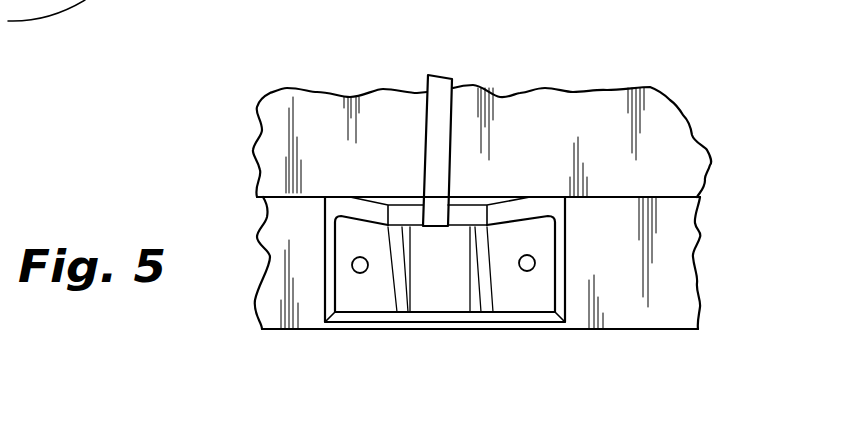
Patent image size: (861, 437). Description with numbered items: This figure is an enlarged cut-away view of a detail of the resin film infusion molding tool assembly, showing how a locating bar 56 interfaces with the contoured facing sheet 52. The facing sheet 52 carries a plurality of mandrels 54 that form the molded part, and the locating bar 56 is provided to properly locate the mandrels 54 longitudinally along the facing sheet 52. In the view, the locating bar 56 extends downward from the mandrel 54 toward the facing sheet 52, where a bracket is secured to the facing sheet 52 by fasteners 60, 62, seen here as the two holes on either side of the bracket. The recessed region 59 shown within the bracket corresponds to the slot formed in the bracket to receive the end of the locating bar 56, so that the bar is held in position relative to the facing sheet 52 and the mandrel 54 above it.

The contoured facing sheet 52 is at (677, 285).
The mandrel 54 is at (652, 162).
The locating bar 56 is at (455, 132).
The recess 59 is at (530, 307).
The fastener 60 is at (360, 273).
The fastener 62 is at (535, 267).